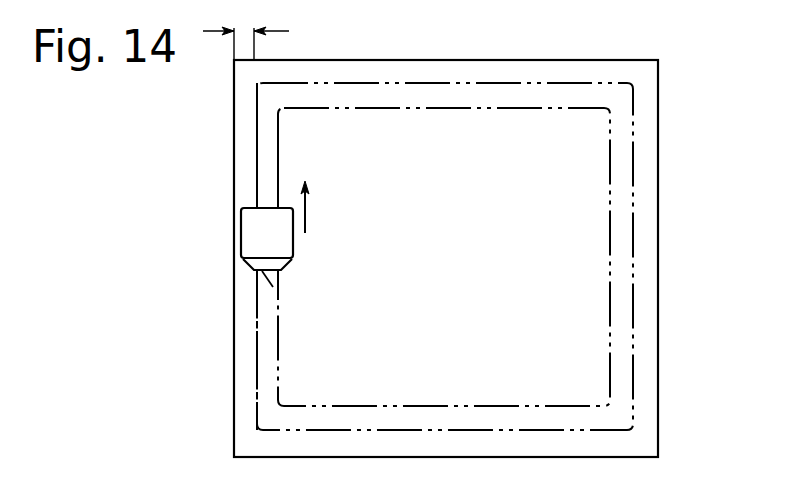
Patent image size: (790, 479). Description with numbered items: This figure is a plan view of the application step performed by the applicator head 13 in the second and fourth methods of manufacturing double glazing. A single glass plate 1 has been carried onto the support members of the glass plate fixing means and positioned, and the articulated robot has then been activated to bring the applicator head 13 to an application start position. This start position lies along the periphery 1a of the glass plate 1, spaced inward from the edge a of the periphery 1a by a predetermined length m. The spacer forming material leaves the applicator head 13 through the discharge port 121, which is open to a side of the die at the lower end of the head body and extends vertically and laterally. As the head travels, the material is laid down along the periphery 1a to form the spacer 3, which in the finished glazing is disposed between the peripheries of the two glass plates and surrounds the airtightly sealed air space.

The glass plate 1 is at (662, 130).
The periphery 1a is at (243, 175).
The spacer 3 is at (375, 95).
The applicator head 13 is at (242, 240).
The discharge port 121 is at (273, 287).
The edge a is at (235, 123).
The predetermined length m is at (246, 30).